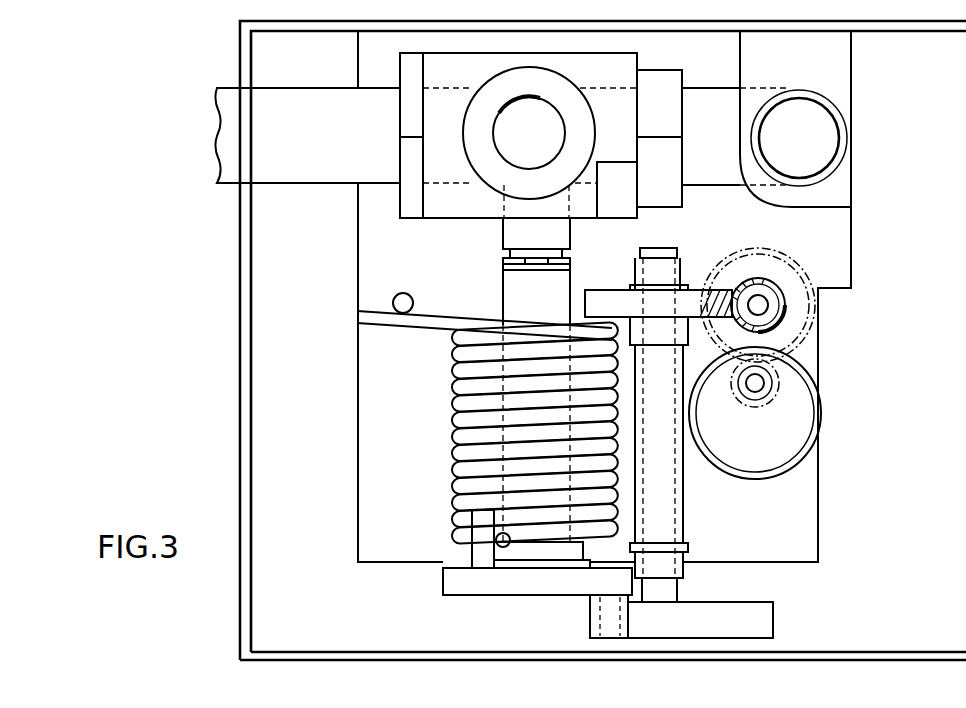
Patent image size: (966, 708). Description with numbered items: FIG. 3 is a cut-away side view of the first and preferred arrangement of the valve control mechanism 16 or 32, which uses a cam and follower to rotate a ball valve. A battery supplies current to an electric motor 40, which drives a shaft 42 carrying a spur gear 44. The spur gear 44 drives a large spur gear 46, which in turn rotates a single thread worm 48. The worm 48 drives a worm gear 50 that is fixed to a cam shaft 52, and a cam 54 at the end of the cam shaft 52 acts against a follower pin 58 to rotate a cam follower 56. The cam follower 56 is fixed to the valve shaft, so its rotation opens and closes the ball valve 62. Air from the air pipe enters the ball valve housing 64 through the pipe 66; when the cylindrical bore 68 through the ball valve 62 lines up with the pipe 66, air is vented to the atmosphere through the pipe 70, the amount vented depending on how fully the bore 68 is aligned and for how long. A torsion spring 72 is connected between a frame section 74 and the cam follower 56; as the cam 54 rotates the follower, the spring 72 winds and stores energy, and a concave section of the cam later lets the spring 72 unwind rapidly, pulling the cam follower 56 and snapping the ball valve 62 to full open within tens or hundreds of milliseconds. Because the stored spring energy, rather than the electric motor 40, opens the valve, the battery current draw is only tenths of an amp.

The valve control mechanism 16 is at (222, 391).
The valve control mechanism 32 is at (539, 340).
The electric motor 40 is at (782, 439).
The shaft 42 is at (764, 386).
The spur gear 44 is at (780, 383).
The large spur gear 46 is at (800, 318).
The single thread worm 48 is at (765, 295).
The worm gear 50 is at (615, 300).
The cam shaft 52 is at (665, 527).
The cam 54 is at (762, 627).
The cam follower 56 is at (512, 585).
The follower pin 58 is at (590, 608).
The ball valve 62 is at (582, 137).
The ball valve housing 64 is at (435, 71).
The pipe 66 is at (306, 144).
The cylindrical bore 68 is at (538, 144).
The pipe 70 is at (812, 130).
The torsion spring 72 is at (455, 400).
The frame section 74 is at (357, 318).